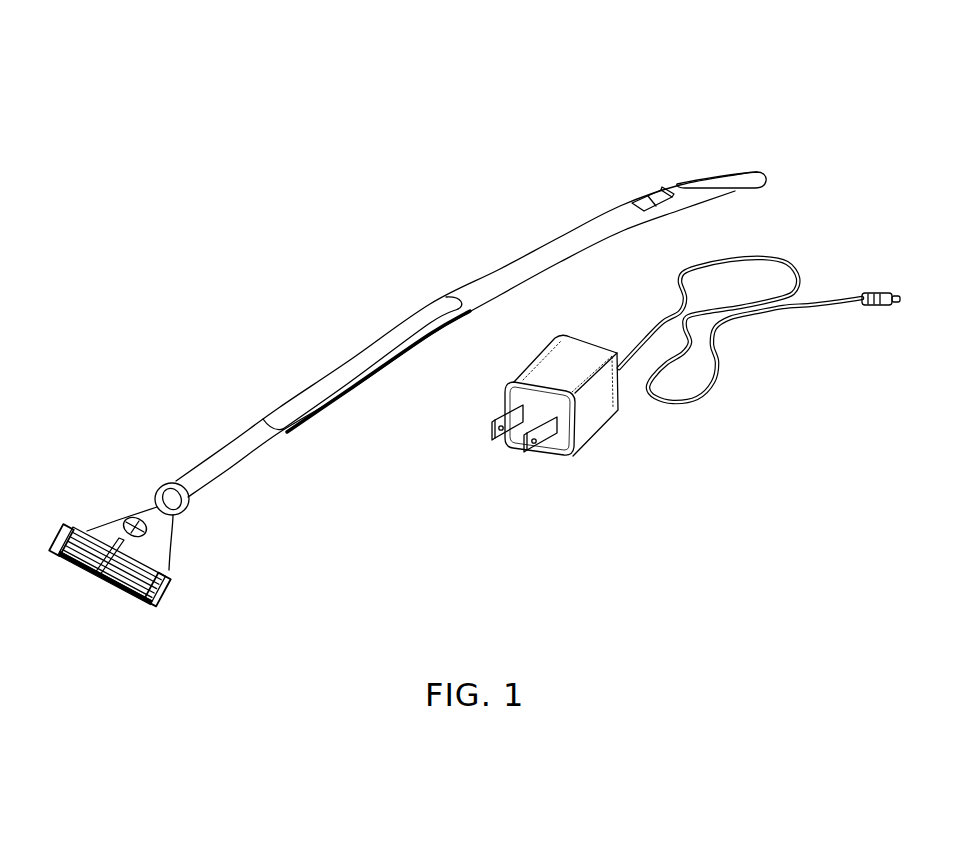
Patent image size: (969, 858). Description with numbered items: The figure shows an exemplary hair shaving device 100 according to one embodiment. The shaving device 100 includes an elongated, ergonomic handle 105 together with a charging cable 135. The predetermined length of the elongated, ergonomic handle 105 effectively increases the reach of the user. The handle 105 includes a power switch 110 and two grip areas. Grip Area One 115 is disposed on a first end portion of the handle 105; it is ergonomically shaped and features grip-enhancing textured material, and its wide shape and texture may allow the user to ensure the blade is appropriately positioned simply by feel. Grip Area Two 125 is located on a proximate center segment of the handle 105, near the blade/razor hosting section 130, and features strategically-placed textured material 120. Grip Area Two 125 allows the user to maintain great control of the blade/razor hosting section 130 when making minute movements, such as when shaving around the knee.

The shaving device 100 is at (349, 113).
The elongated, ergonomic handle 105 is at (500, 277).
The power switch 110 is at (653, 191).
The Grip Area One 115 is at (763, 173).
The textured material 120 is at (357, 390).
The Grip Area Two 125 is at (307, 397).
The blade/razor hosting section 130 is at (103, 582).
The charging cable 135 is at (603, 402).